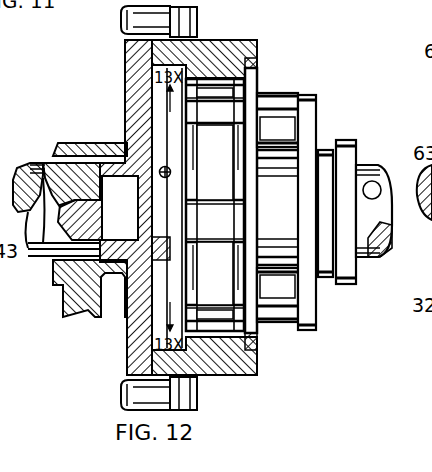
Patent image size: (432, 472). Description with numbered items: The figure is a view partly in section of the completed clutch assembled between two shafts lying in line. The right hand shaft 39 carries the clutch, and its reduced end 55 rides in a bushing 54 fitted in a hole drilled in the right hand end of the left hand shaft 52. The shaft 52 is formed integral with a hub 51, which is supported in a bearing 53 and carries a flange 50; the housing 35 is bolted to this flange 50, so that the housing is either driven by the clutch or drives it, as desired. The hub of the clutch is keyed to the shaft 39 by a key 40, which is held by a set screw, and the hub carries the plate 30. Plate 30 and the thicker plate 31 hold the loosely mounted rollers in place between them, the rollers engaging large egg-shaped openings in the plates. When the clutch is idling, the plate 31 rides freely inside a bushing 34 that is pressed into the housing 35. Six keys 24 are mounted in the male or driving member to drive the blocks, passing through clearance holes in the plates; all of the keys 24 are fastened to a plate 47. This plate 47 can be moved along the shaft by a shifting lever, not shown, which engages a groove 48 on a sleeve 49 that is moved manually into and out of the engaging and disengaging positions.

The keys 24 is at (283, 100).
The plate 30 is at (181, 293).
The plate 31 is at (250, 82).
The bushing 34 is at (255, 62).
The housing 35 is at (220, 54).
The shaft 39 is at (375, 258).
The key 40 is at (368, 186).
The plate 47 is at (310, 125).
The groove 48 is at (328, 150).
The sleeve 49 is at (349, 157).
The flange 50 is at (135, 61).
The hub 51 is at (123, 142).
The shaft 52 is at (16, 163).
The bearing 53 is at (70, 143).
The bushing 54 is at (156, 174).
The reduced end 55 is at (140, 207).